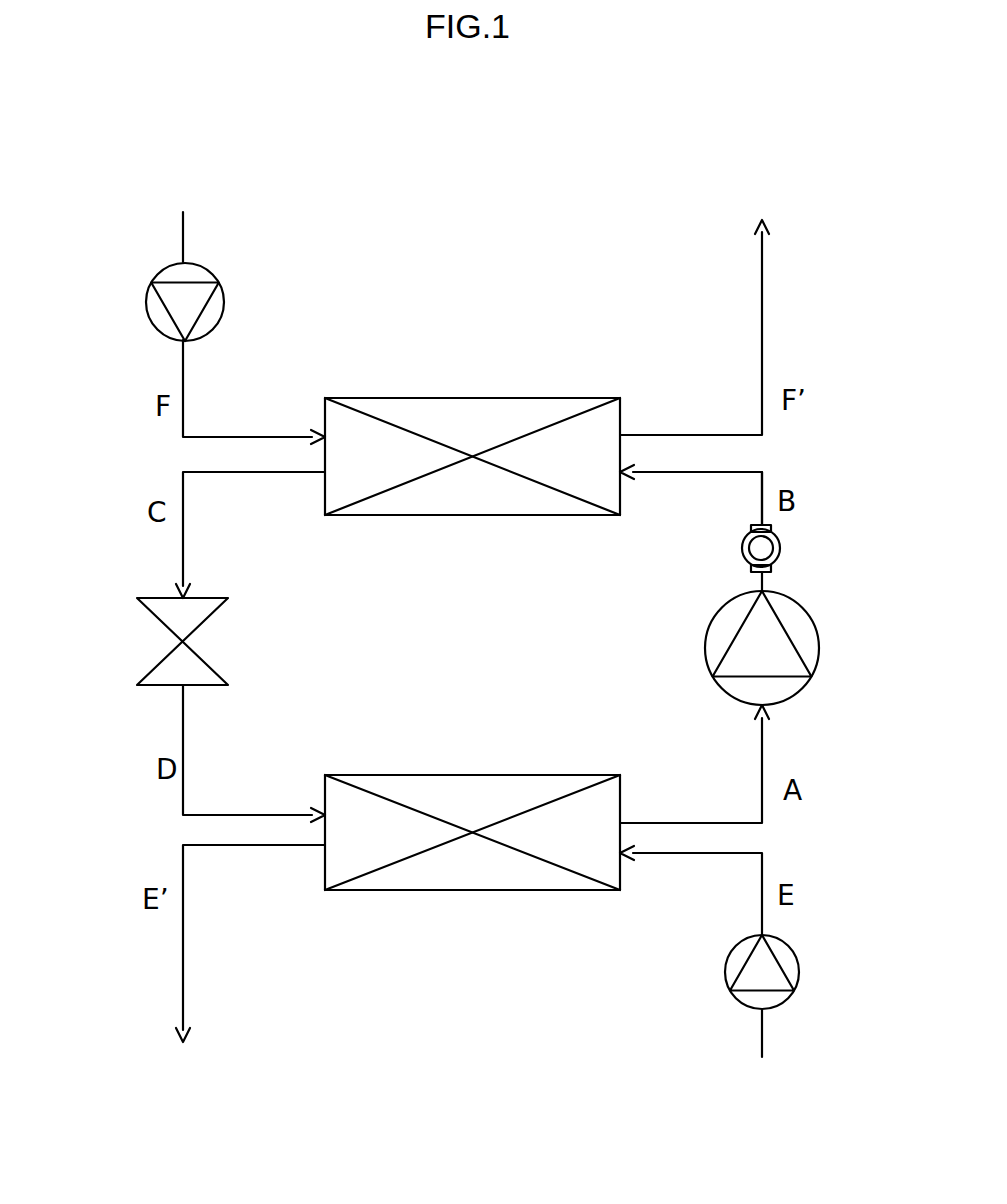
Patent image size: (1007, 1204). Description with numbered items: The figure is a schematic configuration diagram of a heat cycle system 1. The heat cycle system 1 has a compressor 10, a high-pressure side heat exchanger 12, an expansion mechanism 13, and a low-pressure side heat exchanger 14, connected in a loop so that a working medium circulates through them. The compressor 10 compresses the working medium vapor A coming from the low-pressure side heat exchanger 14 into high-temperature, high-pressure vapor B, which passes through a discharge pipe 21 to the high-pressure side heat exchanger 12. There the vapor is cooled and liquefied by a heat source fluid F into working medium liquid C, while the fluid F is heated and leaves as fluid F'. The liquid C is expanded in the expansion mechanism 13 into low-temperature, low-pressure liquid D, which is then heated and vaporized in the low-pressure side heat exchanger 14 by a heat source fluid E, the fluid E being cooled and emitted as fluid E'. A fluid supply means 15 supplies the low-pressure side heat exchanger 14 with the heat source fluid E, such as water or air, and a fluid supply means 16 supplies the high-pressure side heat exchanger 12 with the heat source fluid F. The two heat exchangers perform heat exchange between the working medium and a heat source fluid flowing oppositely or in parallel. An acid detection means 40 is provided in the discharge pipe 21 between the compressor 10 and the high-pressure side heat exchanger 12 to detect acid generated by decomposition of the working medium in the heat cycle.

The heat cycle system 1 is at (470, 157).
The compressor 10 is at (818, 620).
The high-pressure side heat exchanger 12 is at (552, 398).
The expansion mechanism 13 is at (140, 597).
The low-pressure side heat exchanger 14 is at (563, 775).
The fluid supply means 15 is at (796, 948).
The fluid supply means 16 is at (160, 275).
The discharge pipe 21 is at (760, 470).
The acid detection means 40 is at (779, 545).